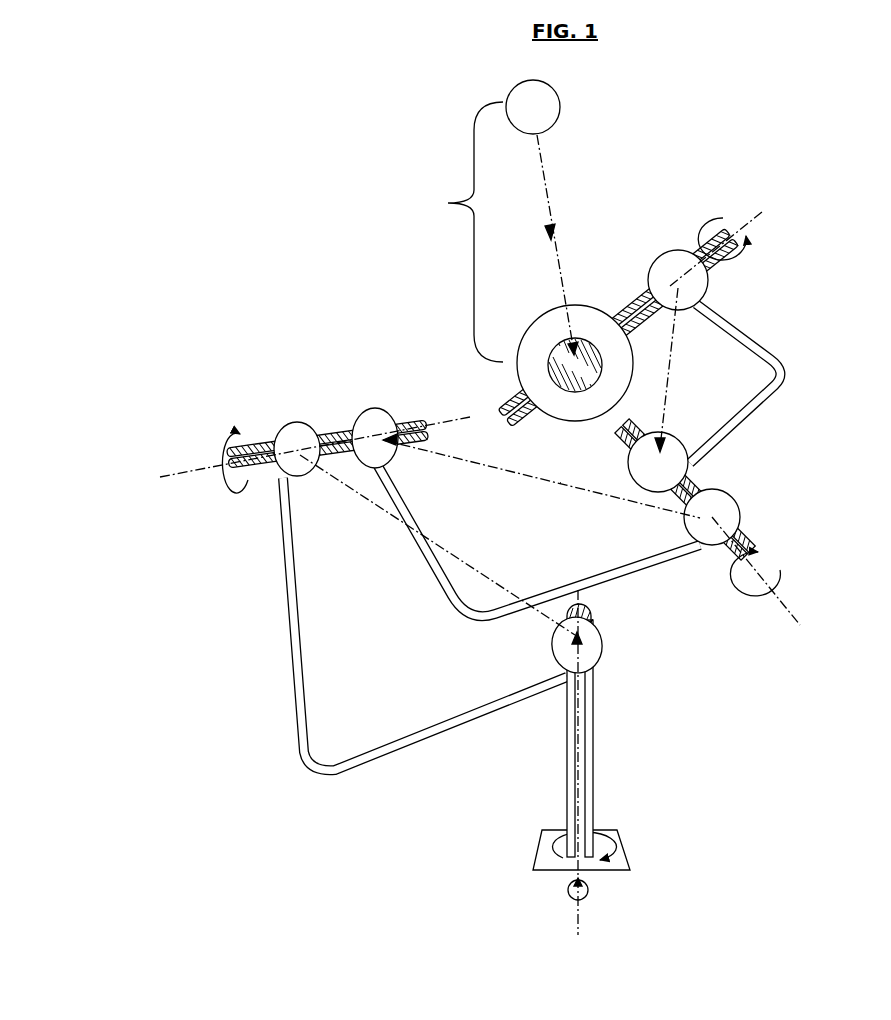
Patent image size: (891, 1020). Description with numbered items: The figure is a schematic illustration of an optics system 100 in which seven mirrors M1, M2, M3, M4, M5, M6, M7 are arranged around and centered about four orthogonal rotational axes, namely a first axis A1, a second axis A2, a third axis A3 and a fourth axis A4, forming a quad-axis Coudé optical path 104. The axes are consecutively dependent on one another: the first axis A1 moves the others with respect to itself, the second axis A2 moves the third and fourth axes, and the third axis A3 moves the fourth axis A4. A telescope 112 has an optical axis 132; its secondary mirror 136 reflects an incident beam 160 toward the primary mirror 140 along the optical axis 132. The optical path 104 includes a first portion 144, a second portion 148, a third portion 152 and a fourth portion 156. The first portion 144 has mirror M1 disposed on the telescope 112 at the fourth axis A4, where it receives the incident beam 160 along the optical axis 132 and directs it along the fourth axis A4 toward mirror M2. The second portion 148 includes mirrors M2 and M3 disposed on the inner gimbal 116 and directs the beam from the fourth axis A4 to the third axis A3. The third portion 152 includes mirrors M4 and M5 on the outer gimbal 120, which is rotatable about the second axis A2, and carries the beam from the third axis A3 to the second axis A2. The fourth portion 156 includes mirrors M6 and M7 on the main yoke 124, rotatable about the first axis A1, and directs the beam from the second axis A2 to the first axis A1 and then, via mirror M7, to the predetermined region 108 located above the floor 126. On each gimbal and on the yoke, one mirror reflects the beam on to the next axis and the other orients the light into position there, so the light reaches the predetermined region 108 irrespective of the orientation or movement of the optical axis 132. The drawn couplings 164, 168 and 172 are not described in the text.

The optics system 100 is at (705, 122).
The optical path 104 is at (560, 483).
The predetermined region 108 is at (572, 886).
The telescope 112 is at (449, 232).
The inner gimbal 116 is at (775, 398).
The outer gimbal 120 is at (533, 590).
The main yoke 124 is at (406, 740).
The floor 126 is at (620, 848).
The optical axis 132 is at (560, 268).
The secondary mirror 136 is at (558, 108).
The primary mirror 140 is at (575, 378).
The first portion 144 is at (626, 312).
The second portion 148 is at (670, 343).
The third portion 152 is at (475, 470).
The fourth portion 156 is at (368, 505).
The incident beam 160 is at (610, 245).
The coupling shaft 164 is at (700, 479).
The coupling shaft 168 is at (340, 432).
The column 172 is at (580, 742).
The first axis A1 is at (584, 905).
The second axis A2 is at (182, 478).
The third axis A3 is at (795, 620).
The fourth axis A4 is at (758, 216).
The first mirror M1 is at (550, 350).
The mirror M2 is at (700, 283).
The mirror M3 is at (640, 455).
The mirror M4 is at (738, 518).
The mirror M5 is at (380, 418).
The mirror M6 is at (285, 437).
The seventh mirror M7 is at (600, 658).